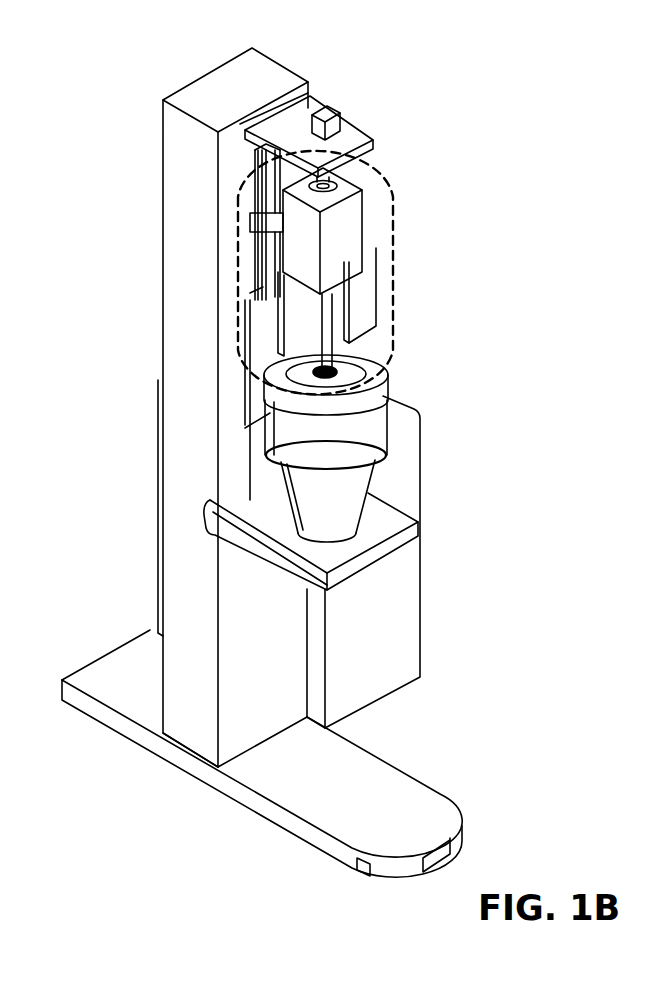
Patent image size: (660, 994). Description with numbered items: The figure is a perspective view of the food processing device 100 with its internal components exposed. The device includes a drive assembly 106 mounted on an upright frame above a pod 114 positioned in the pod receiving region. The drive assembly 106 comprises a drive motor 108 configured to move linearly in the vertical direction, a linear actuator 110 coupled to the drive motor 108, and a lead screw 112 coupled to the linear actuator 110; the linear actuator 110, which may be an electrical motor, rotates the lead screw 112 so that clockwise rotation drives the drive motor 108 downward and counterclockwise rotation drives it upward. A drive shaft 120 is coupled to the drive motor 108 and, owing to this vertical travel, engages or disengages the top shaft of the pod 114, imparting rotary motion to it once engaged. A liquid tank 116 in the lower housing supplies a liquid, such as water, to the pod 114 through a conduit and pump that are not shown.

The food processing device 100 is at (444, 74).
The drive assembly 106 is at (393, 197).
The drive motor 108 is at (347, 328).
The linear actuator 110 is at (345, 232).
The lead screw 112 is at (327, 186).
The pod 114 is at (348, 487).
The liquid tank 116 is at (400, 573).
The drive shaft 120 is at (327, 370).